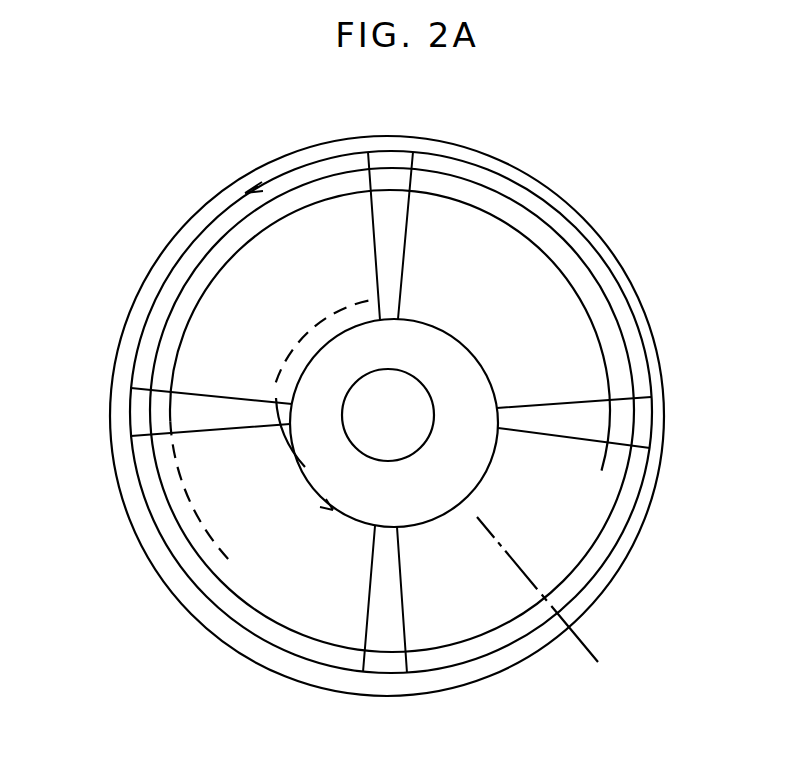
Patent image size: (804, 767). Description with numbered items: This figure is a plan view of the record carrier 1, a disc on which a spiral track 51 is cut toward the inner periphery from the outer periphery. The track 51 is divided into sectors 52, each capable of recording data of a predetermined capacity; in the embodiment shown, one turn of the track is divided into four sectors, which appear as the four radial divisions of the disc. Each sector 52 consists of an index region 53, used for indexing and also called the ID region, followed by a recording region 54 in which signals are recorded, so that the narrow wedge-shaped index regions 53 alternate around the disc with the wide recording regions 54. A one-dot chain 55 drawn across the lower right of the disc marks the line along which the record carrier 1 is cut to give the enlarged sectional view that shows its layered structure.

The record carrier 1 is at (578, 207).
The spiral track 51 is at (653, 458).
The sector 52 is at (731, 381).
The index region 53 is at (398, 152).
The recording region 54 is at (300, 166).
The one-dot chain 55 is at (586, 641).